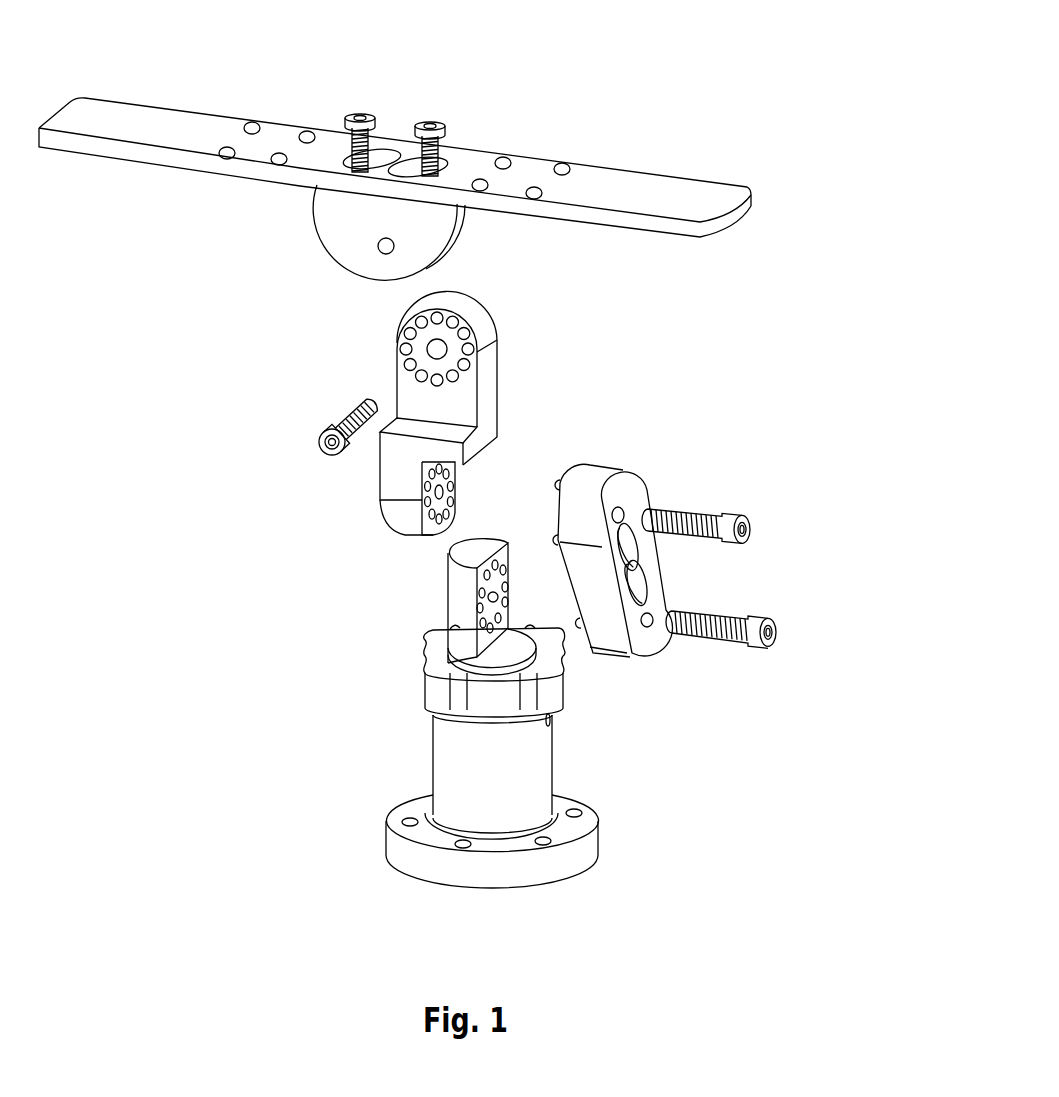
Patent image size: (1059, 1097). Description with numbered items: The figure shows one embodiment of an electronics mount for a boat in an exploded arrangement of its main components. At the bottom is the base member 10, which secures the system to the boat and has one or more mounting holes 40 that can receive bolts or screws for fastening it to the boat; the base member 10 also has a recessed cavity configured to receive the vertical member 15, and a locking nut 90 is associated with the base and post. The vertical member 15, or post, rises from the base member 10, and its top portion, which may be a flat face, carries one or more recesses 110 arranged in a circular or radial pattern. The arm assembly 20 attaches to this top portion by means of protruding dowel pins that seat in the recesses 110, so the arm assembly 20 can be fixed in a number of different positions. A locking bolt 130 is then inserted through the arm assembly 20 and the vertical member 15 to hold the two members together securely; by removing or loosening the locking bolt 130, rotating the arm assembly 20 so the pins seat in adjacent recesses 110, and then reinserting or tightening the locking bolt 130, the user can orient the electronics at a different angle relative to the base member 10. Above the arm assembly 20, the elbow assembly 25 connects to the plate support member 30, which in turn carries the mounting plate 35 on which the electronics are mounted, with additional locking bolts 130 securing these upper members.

The base member 10 is at (432, 762).
The vertical member 15 is at (448, 620).
The arm assembly 20 is at (605, 465).
The elbow assembly 25 is at (497, 360).
The plate support member 30 is at (328, 243).
The mounting plate 35 is at (600, 165).
The mounting holes 40 is at (578, 808).
The locking nut 90 is at (417, 675).
The recess 110 is at (512, 152).
The locking bolt 130 is at (373, 117).